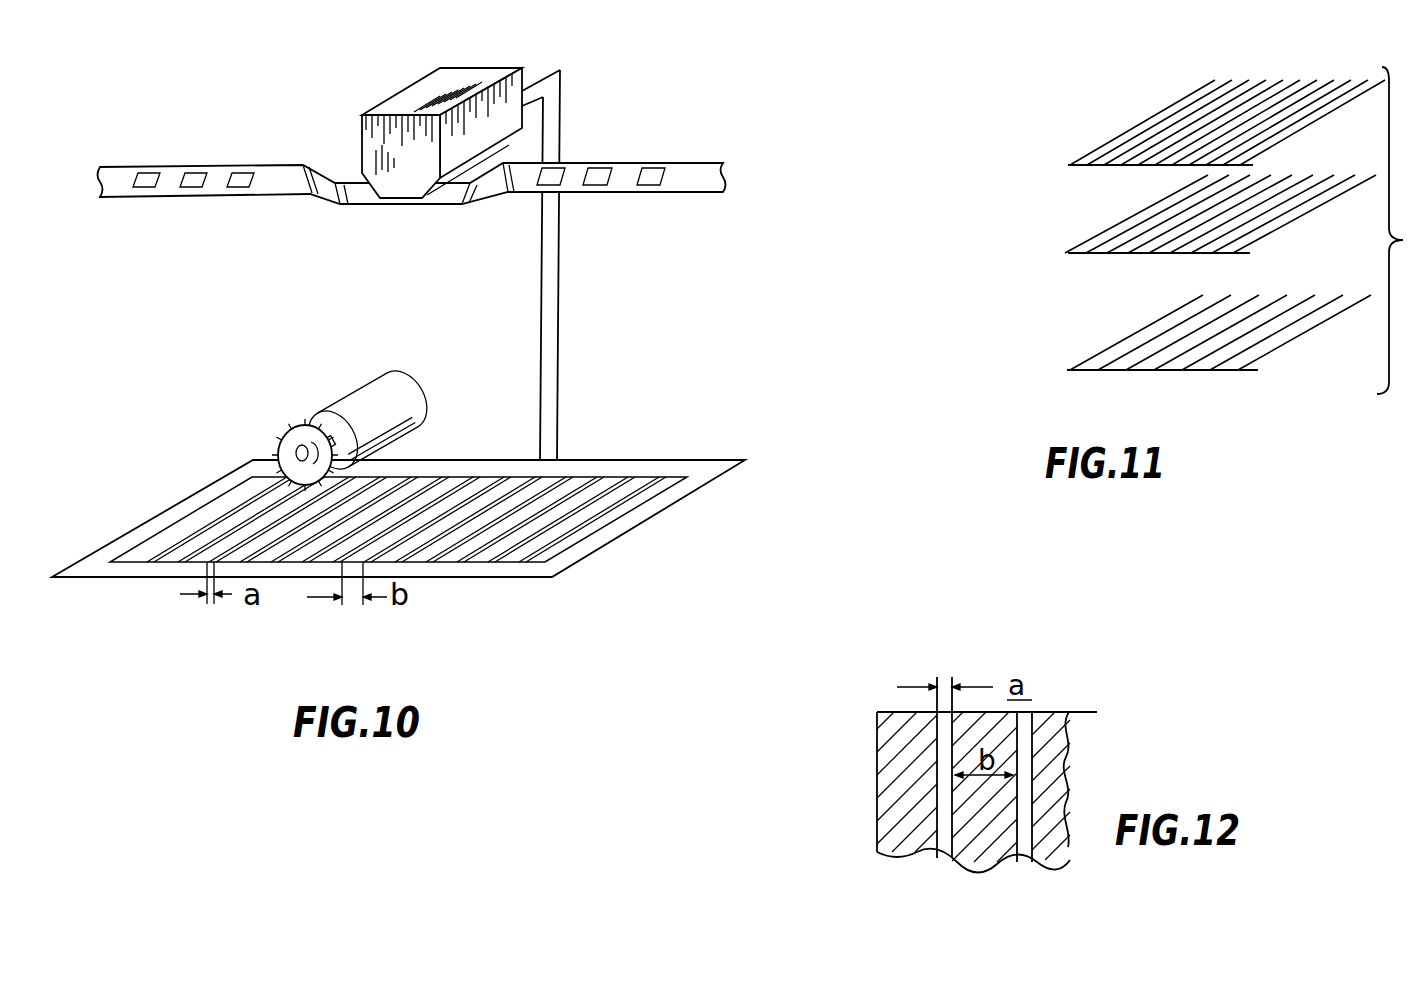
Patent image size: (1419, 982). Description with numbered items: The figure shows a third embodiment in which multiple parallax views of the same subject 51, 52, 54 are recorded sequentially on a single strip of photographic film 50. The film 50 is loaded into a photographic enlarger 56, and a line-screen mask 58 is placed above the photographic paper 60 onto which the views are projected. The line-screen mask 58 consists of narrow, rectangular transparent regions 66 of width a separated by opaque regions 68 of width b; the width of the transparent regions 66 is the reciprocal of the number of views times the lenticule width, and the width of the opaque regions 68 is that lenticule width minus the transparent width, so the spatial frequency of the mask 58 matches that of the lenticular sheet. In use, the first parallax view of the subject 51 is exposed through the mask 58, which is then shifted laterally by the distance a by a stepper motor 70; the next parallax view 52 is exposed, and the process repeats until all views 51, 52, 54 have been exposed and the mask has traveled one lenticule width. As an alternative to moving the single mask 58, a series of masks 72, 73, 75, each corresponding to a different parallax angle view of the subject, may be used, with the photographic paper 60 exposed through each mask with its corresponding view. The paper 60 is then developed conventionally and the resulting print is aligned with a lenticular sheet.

In FIG. 10, the strip of photographic film 50 is at (625, 163).
In FIG. 10, the first parallax view of the subject 51 is at (150, 182).
In FIG. 10, the second parallax view of the subject 52 is at (195, 182).
In FIG. 10, the parallax view of the subject 54 is at (242, 182).
In FIG. 10, the photographic enlarger 56 is at (488, 82).
In FIG. 10, the line-screen mask 58 is at (652, 475).
In FIG. 12, the line-screen mask 58 is at (1057, 737).
In FIG. 10, the photographic paper 60 is at (660, 513).
In FIG. 12, the transparent regions 66 is at (978, 732).
In FIG. 12, the opaque regions 68 is at (902, 772).
In FIG. 10, the stepper motor 70 is at (407, 393).
In FIG. 11, the first mask 72 is at (1093, 150).
In FIG. 11, the second mask 73 is at (1093, 238).
In FIG. 11, the third mask 75 is at (1093, 355).